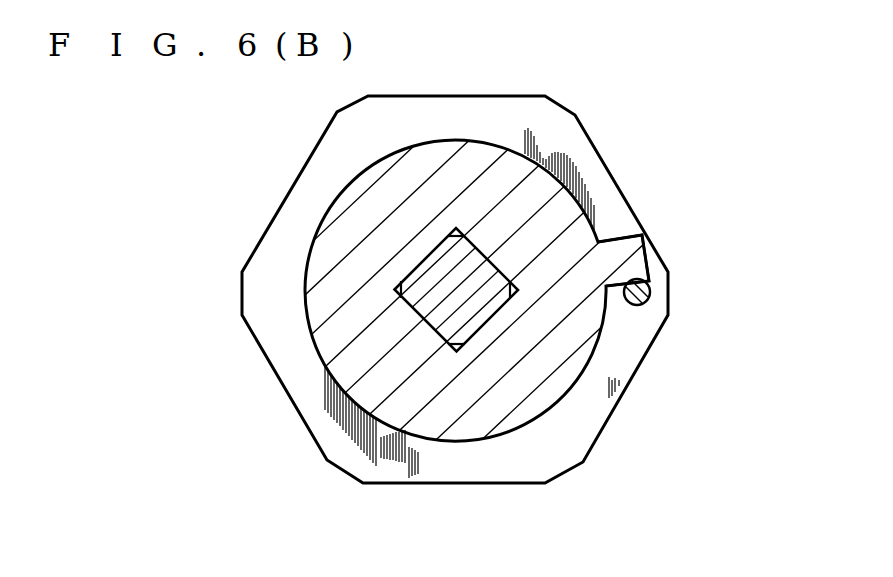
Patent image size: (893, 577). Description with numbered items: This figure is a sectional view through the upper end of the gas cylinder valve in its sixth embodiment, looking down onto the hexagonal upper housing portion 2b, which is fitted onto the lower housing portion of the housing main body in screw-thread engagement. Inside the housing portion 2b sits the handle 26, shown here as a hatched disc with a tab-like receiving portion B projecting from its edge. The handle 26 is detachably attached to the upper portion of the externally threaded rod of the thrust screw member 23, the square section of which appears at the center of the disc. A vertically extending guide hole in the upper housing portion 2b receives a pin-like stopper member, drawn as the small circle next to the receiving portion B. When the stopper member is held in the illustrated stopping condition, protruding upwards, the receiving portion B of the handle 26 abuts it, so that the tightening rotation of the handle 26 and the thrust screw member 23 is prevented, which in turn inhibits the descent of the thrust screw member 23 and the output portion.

The upper housing portion 2b is at (287, 373).
The handle 26 is at (558, 205).
The thrust screw member 23 is at (425, 275).
The receiving portion B is at (637, 263).